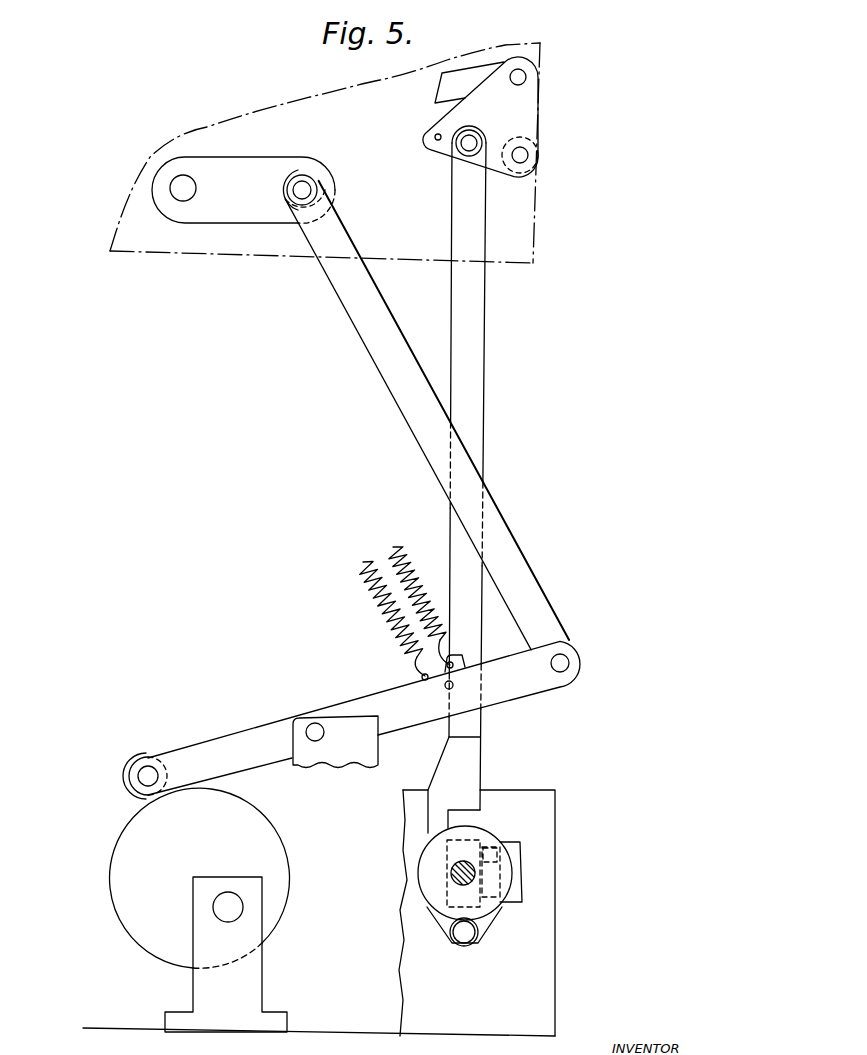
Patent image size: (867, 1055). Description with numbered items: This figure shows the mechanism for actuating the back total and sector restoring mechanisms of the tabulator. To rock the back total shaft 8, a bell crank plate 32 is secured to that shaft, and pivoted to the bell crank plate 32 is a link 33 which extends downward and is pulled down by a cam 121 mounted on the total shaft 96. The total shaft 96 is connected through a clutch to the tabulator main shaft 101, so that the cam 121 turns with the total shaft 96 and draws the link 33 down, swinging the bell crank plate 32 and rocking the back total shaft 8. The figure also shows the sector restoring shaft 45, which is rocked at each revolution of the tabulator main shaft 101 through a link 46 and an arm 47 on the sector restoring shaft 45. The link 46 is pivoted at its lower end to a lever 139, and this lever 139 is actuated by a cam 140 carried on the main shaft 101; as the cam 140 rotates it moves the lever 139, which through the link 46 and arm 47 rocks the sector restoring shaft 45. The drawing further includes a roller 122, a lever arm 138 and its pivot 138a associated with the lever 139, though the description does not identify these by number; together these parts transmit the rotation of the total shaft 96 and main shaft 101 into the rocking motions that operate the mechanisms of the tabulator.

The back total shaft 8 is at (522, 156).
The bell crank plate 32 is at (530, 118).
The link 33 is at (481, 438).
The sector restoring shaft 45 is at (182, 197).
The link 46 is at (355, 303).
The arm 47 is at (240, 210).
The total shaft 96 is at (455, 873).
The tabulator main shaft 101 is at (230, 902).
The cam 121 is at (515, 878).
The roller 122 is at (475, 945).
The lever arm 138 is at (398, 695).
The lever pivot 138a is at (127, 770).
The lever 139 is at (312, 730).
The cam 140 is at (145, 877).